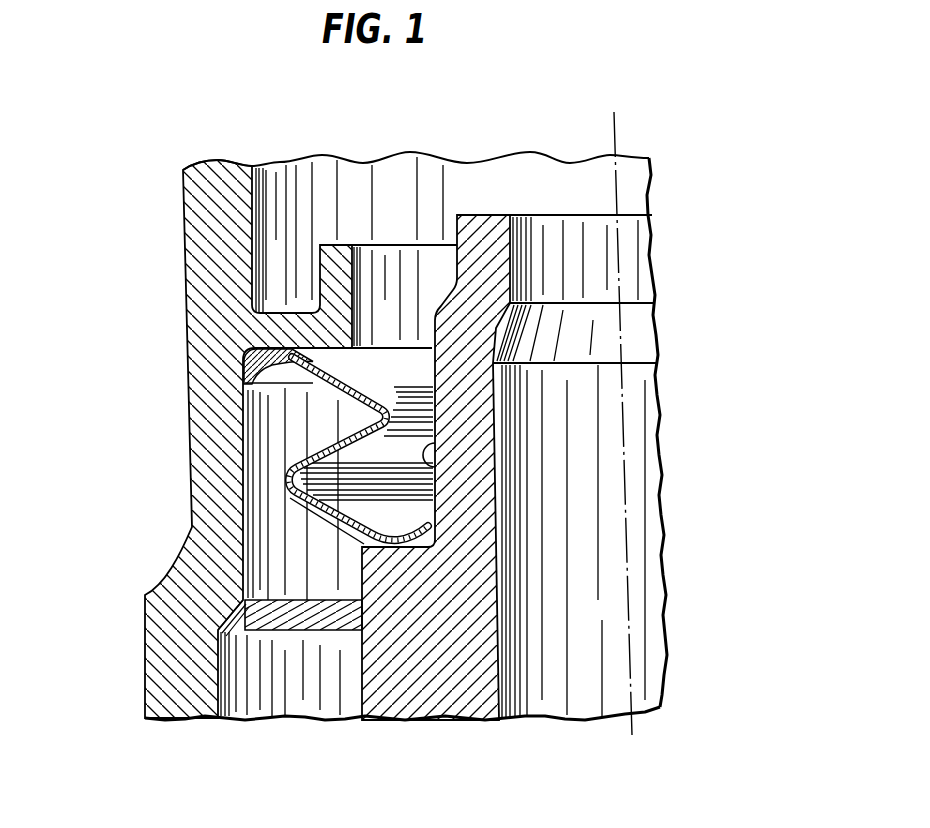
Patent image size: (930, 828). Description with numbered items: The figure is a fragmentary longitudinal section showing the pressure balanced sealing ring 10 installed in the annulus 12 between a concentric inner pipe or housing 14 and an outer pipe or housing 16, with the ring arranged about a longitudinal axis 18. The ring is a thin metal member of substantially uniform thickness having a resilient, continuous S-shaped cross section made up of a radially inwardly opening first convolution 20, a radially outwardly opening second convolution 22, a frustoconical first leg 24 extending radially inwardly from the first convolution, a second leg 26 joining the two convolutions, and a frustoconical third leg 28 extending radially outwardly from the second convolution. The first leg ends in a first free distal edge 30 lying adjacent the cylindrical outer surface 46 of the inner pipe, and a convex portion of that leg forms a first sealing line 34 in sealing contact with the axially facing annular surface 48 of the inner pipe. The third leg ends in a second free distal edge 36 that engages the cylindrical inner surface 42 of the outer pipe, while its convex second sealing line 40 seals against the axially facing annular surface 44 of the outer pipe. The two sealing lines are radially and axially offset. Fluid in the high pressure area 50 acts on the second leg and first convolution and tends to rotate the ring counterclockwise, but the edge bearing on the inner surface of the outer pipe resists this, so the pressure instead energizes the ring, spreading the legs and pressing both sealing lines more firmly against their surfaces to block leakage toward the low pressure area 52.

The sealing ring 10 is at (253, 407).
The annulus 12 is at (237, 687).
The inner pipe or housing 14 is at (489, 728).
The outer pipe or housing 16 is at (181, 244).
The longitudinal axis 18 is at (618, 132).
The first convolution 20 is at (282, 501).
The second convolution 22 is at (399, 381).
The first leg 24 is at (327, 534).
The second leg 26 is at (311, 437).
The third leg 28 is at (357, 365).
The first free distal edge 30 is at (437, 512).
The first sealing line 34 is at (395, 559).
The second free distal edge 36 is at (246, 381).
The second sealing line 40 is at (275, 337).
The inner surface 42 is at (246, 486).
The axially facing annular surface 44 is at (306, 316).
The outer surface 46 is at (440, 467).
The axially facing annular surface 48 is at (362, 546).
The high pressure area 50 is at (416, 175).
The low pressure area 52 is at (282, 696).